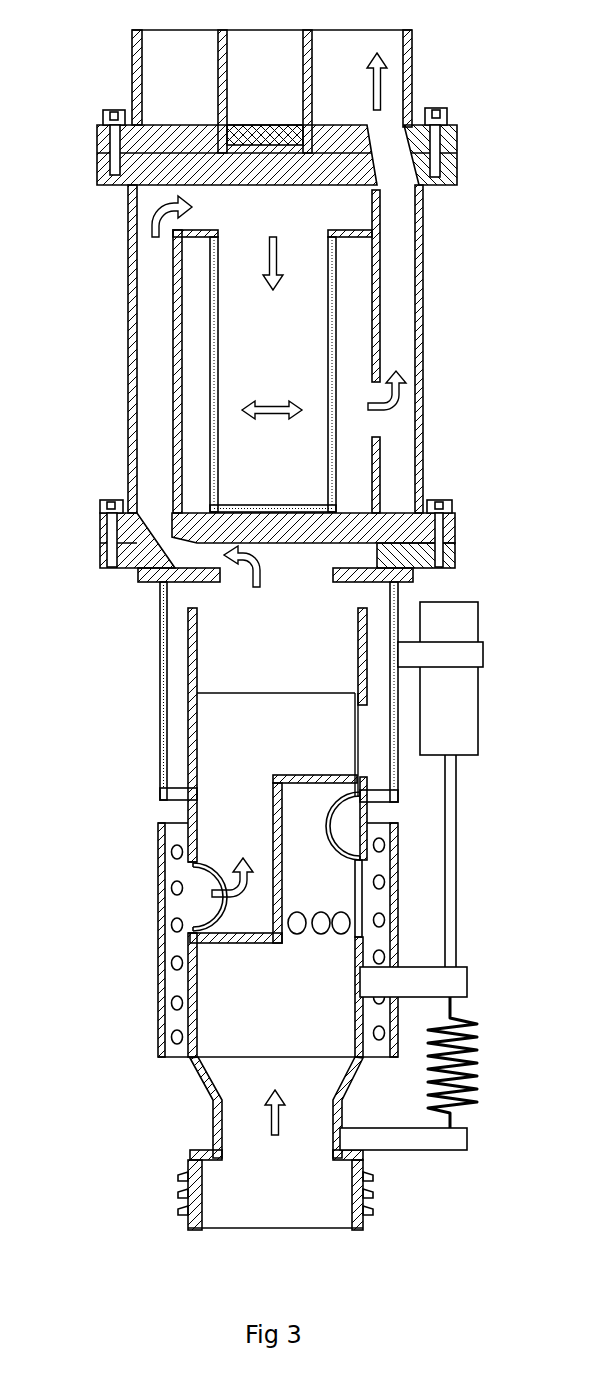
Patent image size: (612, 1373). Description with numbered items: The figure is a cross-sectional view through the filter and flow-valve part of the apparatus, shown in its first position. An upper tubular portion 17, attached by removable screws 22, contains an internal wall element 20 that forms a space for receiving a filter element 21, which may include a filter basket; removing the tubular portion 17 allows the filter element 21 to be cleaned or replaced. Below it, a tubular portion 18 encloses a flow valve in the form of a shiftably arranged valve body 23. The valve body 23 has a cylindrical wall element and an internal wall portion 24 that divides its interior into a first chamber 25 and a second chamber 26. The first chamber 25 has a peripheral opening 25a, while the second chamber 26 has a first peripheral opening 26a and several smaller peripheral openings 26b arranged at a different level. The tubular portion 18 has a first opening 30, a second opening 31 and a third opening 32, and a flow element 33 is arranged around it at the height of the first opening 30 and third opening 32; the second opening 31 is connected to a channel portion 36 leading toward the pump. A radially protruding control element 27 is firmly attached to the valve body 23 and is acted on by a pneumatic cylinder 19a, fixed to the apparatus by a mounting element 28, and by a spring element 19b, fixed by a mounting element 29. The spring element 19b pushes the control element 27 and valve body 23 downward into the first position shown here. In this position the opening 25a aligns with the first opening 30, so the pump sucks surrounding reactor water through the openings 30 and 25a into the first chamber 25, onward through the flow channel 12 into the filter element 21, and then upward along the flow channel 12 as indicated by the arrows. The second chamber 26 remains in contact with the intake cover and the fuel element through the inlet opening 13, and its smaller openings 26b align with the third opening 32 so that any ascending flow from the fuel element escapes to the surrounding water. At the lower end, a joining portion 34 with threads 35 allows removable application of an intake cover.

The flow channel 12 is at (307, 623).
The inlet opening 13 is at (308, 1230).
The tubular portion 17 is at (133, 322).
The tubular portion 18 is at (160, 700).
The pneumatic cylinder 19a is at (438, 693).
The spring element 19b is at (477, 1065).
The internal wall element 20 is at (175, 385).
The filter element 21 is at (215, 342).
The screws 22 is at (443, 110).
The valve body 23 is at (202, 718).
The internal wall portion 24 is at (292, 778).
The first chamber 25 is at (257, 762).
The peripheral opening 25a is at (220, 862).
The second chamber 26 is at (262, 1021).
The first peripheral opening 26a is at (330, 845).
The smaller peripheral openings 26b is at (318, 923).
The control element 27 is at (457, 978).
The mounting element 28 is at (465, 652).
The mounting element 29 is at (407, 1138).
The first opening 30 is at (192, 903).
The second opening 31 is at (362, 743).
The third opening 32 is at (363, 908).
The flow element 33 is at (160, 980).
The joining portion 34 is at (192, 1166).
The threads 35 is at (178, 1195).
The channel portion 36 is at (377, 702).